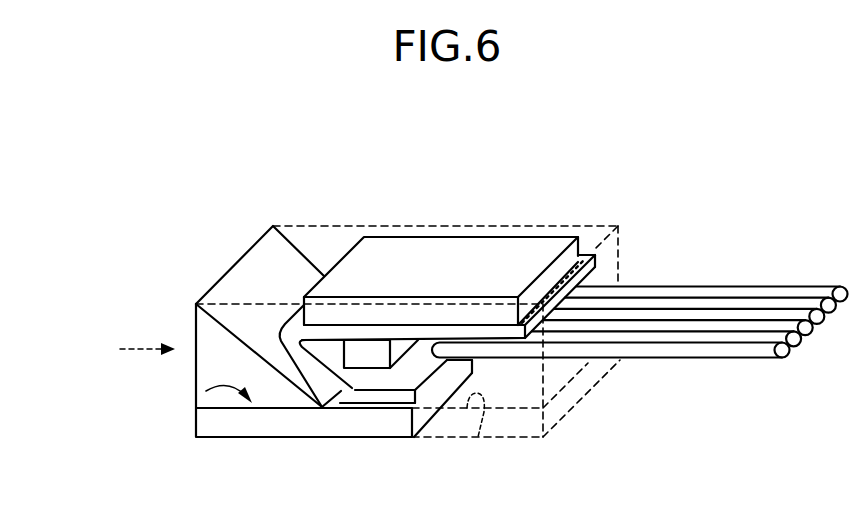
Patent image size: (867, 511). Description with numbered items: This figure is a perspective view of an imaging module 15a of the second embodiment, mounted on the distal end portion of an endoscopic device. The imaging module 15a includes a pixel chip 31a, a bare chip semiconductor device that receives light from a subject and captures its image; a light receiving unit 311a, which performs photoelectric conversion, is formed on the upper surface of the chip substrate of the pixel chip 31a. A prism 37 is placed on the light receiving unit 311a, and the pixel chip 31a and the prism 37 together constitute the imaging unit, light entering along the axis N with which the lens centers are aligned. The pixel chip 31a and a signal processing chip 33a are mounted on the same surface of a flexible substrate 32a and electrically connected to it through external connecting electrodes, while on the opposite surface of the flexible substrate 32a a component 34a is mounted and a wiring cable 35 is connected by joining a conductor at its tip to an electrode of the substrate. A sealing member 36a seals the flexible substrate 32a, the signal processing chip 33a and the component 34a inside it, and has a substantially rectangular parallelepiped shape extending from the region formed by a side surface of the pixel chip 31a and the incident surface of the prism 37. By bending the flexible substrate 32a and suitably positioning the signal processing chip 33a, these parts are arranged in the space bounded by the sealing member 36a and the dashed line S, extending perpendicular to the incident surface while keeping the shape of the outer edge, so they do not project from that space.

The imaging module 15a is at (665, 190).
The pixel chip 31a is at (243, 430).
The light receiving unit 311a is at (212, 395).
The flexible substrate 32a is at (388, 392).
The signal processing chip 33a is at (432, 247).
The component 34a is at (354, 356).
The wiring cable 35 is at (760, 287).
The sealing member 36a is at (538, 226).
The prism 37 is at (200, 318).
The axis N is at (140, 351).
The dashed line S is at (478, 443).